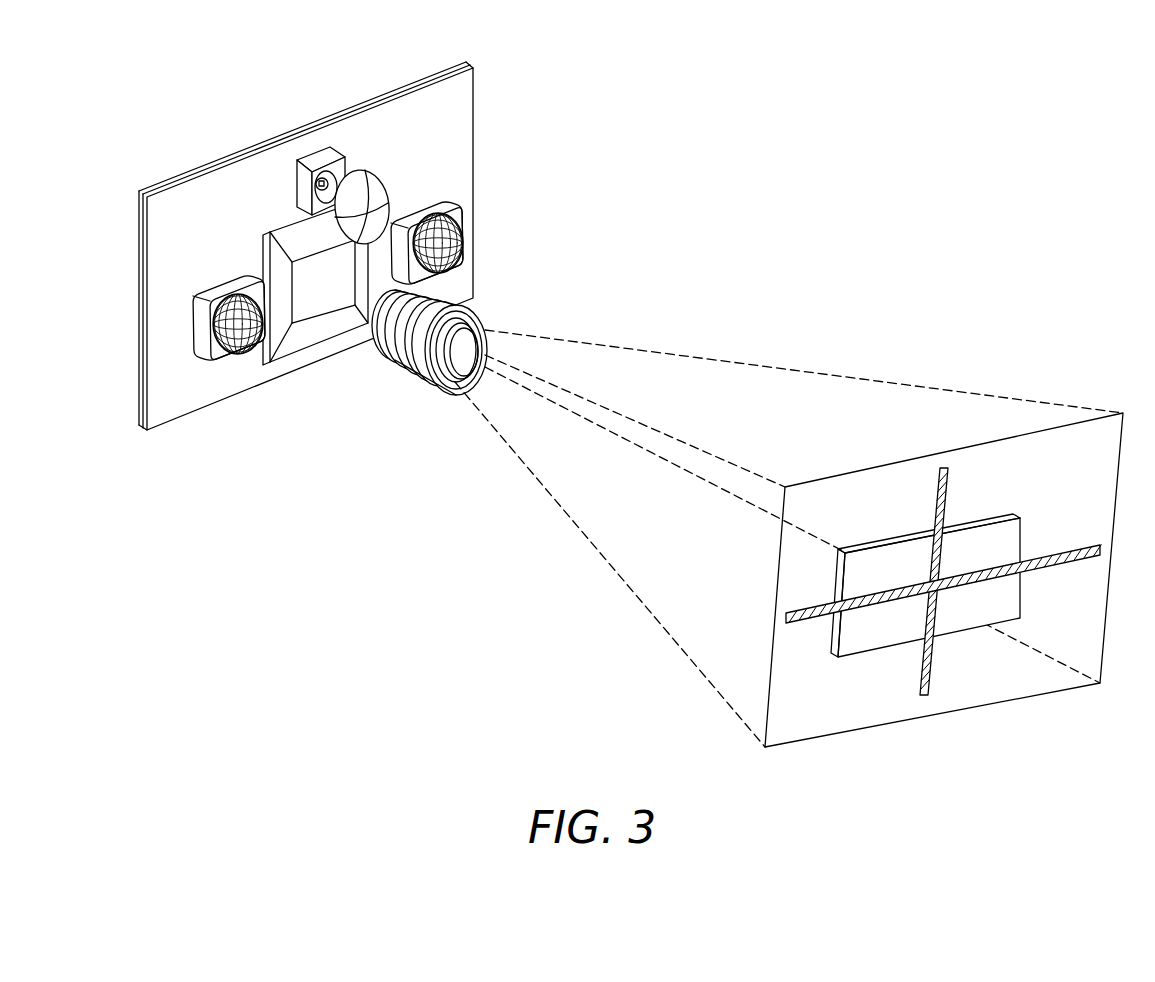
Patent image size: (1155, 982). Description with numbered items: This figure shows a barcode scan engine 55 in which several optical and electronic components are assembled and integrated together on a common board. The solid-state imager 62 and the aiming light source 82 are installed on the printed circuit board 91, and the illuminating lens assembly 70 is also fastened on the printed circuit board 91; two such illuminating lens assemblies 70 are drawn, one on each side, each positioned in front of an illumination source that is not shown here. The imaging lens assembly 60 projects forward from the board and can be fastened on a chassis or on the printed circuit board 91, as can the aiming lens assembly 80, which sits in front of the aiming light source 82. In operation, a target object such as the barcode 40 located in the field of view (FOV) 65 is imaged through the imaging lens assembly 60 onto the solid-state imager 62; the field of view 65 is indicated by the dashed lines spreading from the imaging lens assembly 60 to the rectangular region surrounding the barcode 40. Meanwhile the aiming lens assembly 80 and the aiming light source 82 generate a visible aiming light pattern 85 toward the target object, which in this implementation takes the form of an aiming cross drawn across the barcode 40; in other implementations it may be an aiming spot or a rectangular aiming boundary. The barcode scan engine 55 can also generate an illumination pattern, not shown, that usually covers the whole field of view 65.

The barcode scan engine 55 is at (334, 246).
The printed circuit board 91 is at (477, 103).
The solid-state imager 62 is at (317, 307).
The aiming light source 82 is at (340, 149).
The aiming lens assembly 80 is at (389, 176).
The illuminating lens assembly 70 is at (218, 280).
The imaging lens assembly 60 is at (474, 312).
The field of view (FOV) 65 is at (1037, 433).
The barcode 40 is at (1015, 512).
The visible aiming light pattern 85 is at (936, 665).